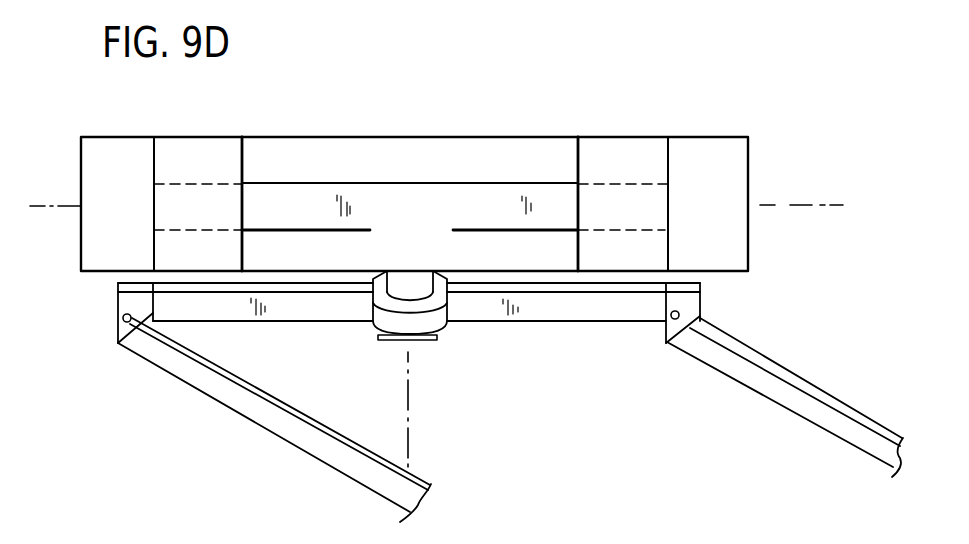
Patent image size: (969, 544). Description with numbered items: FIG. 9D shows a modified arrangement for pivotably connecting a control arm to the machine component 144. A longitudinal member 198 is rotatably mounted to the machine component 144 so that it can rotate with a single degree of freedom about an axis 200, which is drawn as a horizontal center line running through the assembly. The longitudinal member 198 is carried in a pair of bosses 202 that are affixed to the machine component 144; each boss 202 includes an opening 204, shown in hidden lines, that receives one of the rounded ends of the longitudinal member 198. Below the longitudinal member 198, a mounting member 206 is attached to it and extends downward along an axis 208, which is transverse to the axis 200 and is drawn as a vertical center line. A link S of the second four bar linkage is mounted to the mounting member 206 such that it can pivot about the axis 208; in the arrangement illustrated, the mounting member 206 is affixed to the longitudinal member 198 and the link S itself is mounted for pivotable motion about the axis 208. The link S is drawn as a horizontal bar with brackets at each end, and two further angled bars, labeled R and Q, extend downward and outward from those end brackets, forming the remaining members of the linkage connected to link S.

The machine component 144 is at (403, 157).
The longitudinal member 198 is at (298, 200).
The bosses 202 is at (178, 152).
The openings 204 is at (183, 187).
The axis 200 is at (785, 205).
The mounting member 206 is at (433, 340).
The axis 208 is at (408, 413).
The link S is at (547, 307).
The left leg R is at (268, 415).
The right leg Q is at (775, 387).